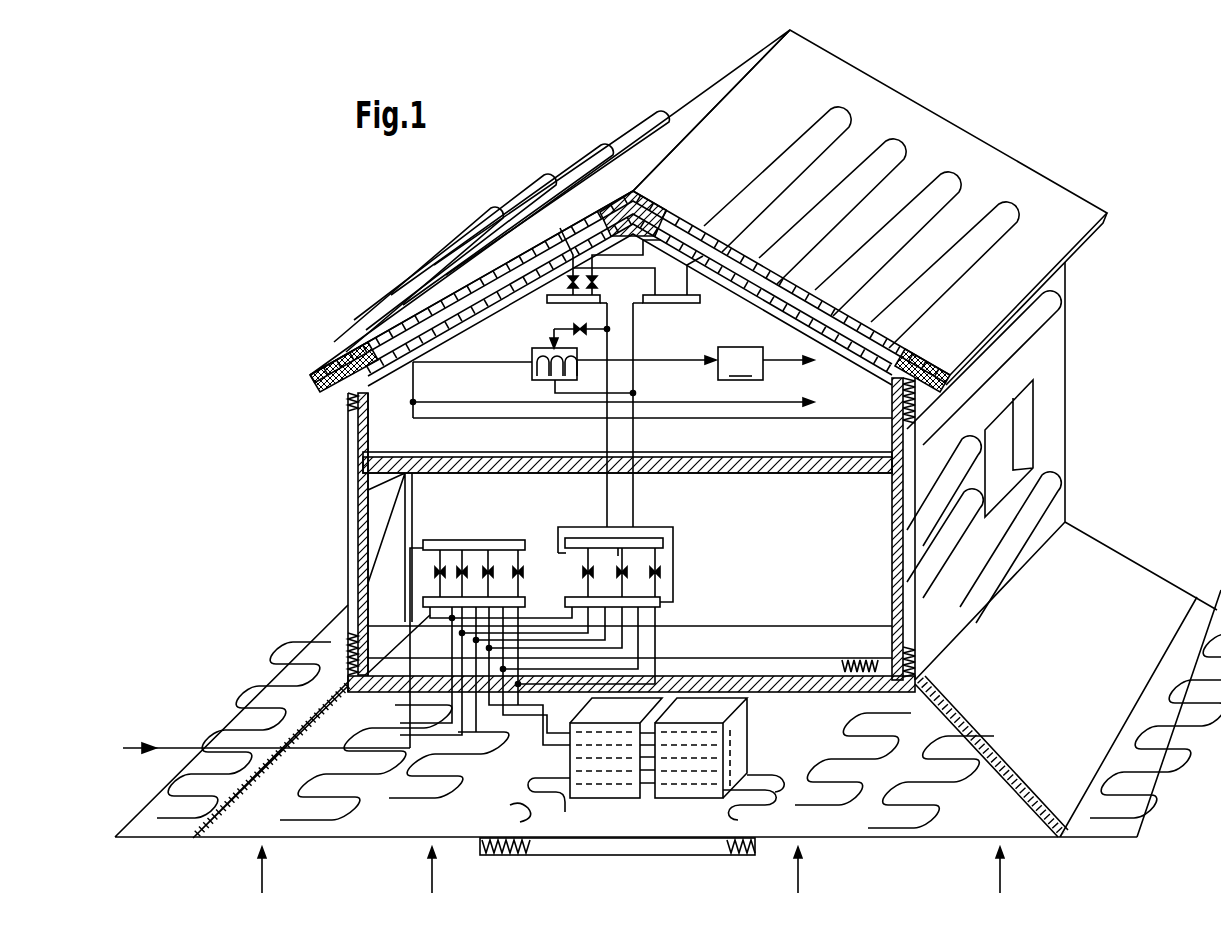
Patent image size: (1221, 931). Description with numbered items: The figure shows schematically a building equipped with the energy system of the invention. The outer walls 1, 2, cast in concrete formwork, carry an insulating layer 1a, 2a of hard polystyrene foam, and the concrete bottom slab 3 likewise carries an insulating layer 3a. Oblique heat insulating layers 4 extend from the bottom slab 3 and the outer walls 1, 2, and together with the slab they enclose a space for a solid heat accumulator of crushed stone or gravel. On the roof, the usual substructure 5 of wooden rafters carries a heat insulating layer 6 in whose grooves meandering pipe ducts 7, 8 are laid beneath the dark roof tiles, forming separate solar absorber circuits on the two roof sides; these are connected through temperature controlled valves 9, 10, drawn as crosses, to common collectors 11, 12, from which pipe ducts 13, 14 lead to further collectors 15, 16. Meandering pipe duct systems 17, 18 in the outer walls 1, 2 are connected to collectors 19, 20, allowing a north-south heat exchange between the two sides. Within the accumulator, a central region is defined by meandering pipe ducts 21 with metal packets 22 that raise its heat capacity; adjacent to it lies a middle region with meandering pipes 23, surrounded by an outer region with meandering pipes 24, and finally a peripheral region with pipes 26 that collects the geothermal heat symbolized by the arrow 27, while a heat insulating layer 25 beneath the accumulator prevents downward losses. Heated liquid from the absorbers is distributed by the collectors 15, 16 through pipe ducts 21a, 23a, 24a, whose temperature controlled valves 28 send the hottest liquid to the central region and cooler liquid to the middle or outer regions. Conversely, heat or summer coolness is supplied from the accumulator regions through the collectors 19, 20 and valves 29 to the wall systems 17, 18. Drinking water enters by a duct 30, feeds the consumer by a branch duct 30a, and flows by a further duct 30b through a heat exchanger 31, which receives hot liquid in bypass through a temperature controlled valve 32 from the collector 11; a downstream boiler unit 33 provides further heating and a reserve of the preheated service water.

The outer wall 1 is at (357, 458).
The insulating layer 1a is at (356, 438).
The outer wall 2 is at (892, 387).
The insulating layer 2a is at (905, 428).
The bottom slab 3 is at (719, 676).
The insulating layer 3a is at (801, 670).
The heat insulating layer 4 is at (283, 743).
The substructure 5 is at (342, 401).
The heat insulating layer 6 is at (312, 385).
The pipe duct 7 is at (648, 124).
The pipe duct 8 is at (790, 135).
The temperature controlled valve 9 is at (568, 283).
The temperature controlled valve 10 is at (596, 283).
The collector 11 is at (550, 306).
The collector 12 is at (692, 305).
The pipe duct 13 is at (606, 429).
The pipe duct 14 is at (635, 434).
The collector 15 is at (652, 546).
The collector 16 is at (665, 600).
The pipe duct system 17 is at (360, 497).
The pipe duct system 18 is at (1058, 308).
The collector 19 is at (477, 540).
The collector 20 is at (521, 602).
The pipe duct 21 is at (517, 797).
The pipe duct 21a is at (673, 558).
The metal packet 22 is at (605, 790).
The pipe 23 is at (458, 785).
The pipe duct 23a is at (618, 556).
The pipe 24 is at (347, 777).
The pipe duct 24a is at (566, 553).
The heat insulating layer 25 is at (665, 850).
The pipe 26 is at (293, 663).
The arrow 27 is at (262, 893).
The temperature controlled valve 28 is at (639, 572).
The temperature controlled valve 29 is at (488, 573).
The duct 30 is at (172, 746).
The branch duct 30a is at (698, 394).
The duct 30b is at (478, 361).
The heat exchanger 31 is at (532, 377).
The temperature controlled valve 32 is at (583, 334).
The heat recovery unit 33 is at (695, 363).